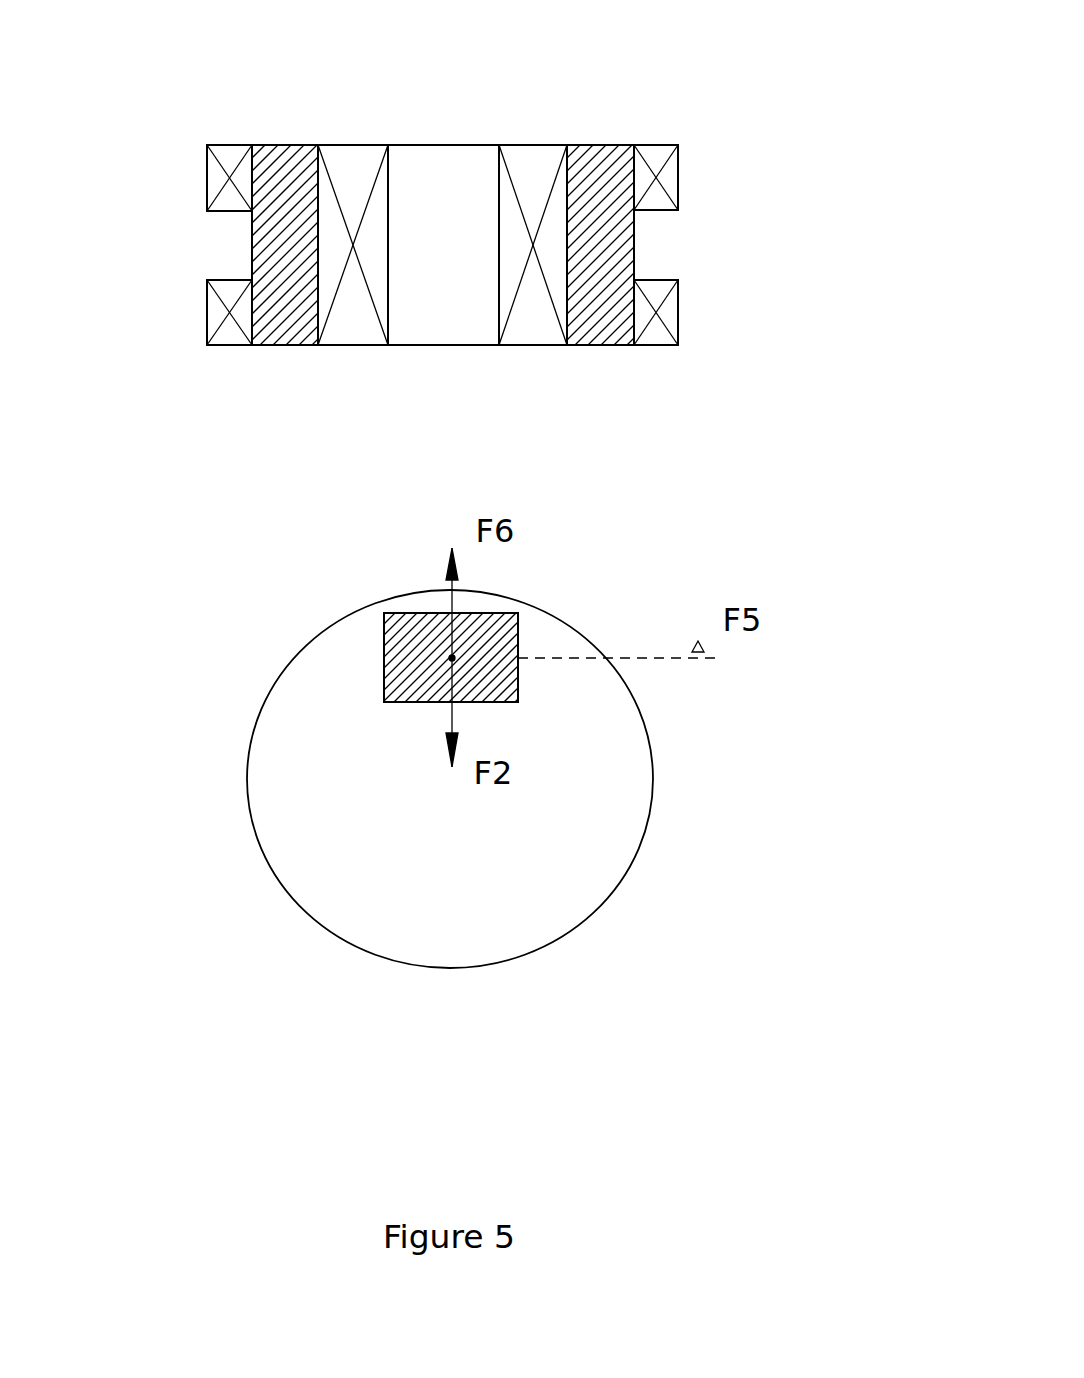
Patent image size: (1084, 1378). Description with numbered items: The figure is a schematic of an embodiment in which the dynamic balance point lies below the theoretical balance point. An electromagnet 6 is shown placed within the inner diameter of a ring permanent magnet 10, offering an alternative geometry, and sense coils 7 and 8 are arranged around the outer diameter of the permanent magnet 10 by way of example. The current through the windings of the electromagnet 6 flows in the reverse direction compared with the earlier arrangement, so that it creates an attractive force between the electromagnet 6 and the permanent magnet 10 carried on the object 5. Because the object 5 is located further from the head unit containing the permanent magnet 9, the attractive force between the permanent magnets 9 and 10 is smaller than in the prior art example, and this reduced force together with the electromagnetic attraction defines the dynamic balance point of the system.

The object 5 is at (395, 805).
The electromagnet 6 is at (367, 167).
The sense coil 7 is at (230, 323).
The sense coil 8 is at (232, 167).
The permanent magnet 9 is at (615, 143).
The permanent magnet 10 is at (402, 635).